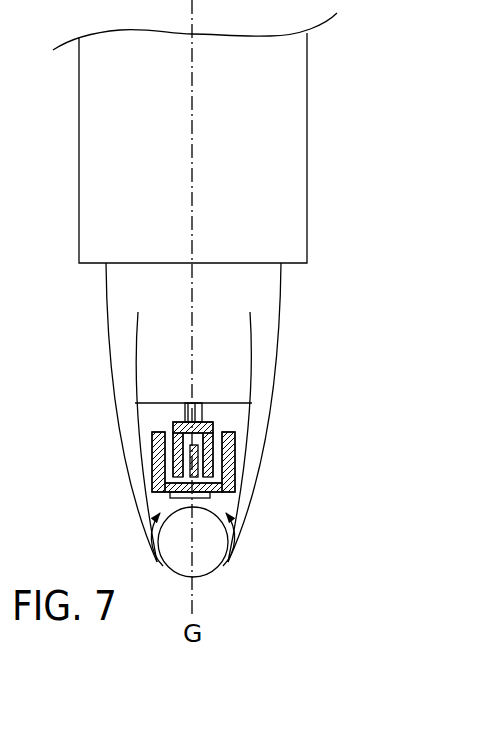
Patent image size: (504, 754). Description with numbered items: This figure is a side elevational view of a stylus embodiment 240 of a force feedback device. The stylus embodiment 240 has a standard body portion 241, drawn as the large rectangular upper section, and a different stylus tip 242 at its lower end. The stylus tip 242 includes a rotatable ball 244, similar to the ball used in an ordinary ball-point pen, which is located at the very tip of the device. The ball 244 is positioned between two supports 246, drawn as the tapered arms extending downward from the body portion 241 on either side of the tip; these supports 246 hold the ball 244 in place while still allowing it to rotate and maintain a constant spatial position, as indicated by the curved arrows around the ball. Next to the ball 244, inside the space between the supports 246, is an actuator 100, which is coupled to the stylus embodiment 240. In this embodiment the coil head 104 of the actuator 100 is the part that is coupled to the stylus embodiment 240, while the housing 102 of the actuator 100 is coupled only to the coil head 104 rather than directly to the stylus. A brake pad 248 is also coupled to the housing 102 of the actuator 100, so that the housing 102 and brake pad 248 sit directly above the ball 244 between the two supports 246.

The stylus embodiment 240 is at (353, 205).
The body portion 241 is at (280, 101).
The stylus tip 242 is at (297, 492).
The rotatable ball 244 is at (207, 558).
The supports 246 is at (127, 435).
The brake pad 248 is at (232, 496).
The actuator 100 is at (227, 420).
The housing 102 is at (152, 486).
The coil head 104 is at (177, 425).